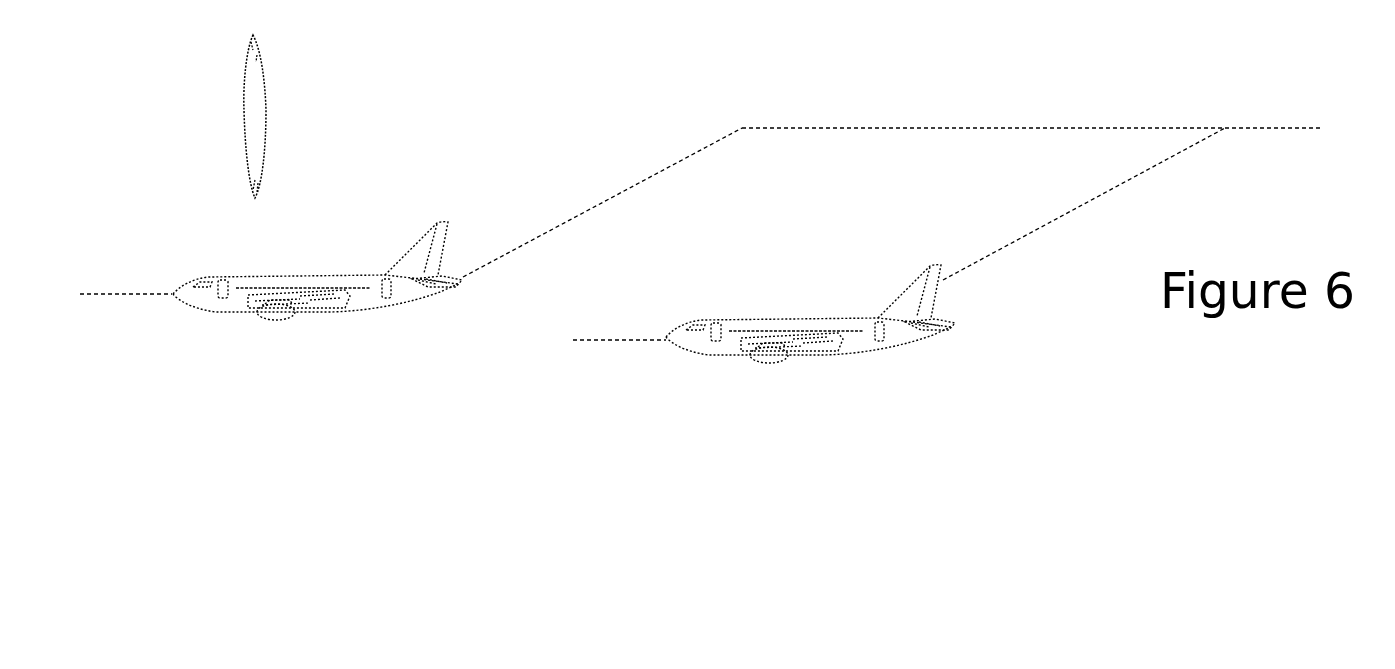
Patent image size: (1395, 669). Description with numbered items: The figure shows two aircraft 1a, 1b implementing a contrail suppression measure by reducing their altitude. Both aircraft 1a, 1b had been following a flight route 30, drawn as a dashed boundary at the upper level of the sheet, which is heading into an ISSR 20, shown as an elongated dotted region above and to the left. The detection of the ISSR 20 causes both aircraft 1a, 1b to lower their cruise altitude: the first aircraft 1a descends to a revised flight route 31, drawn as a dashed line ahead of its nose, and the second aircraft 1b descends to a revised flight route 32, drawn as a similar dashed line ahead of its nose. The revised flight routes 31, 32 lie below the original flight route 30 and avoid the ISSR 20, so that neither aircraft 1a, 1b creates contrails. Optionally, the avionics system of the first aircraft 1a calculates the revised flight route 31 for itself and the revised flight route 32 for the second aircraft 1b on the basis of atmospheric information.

The first aircraft 1a is at (248, 237).
The second aircraft 1b is at (822, 250).
The ISSR 20 is at (262, 117).
The flight route 30 is at (835, 128).
The revised flight route 31 is at (125, 293).
The revised flight route 32 is at (630, 338).